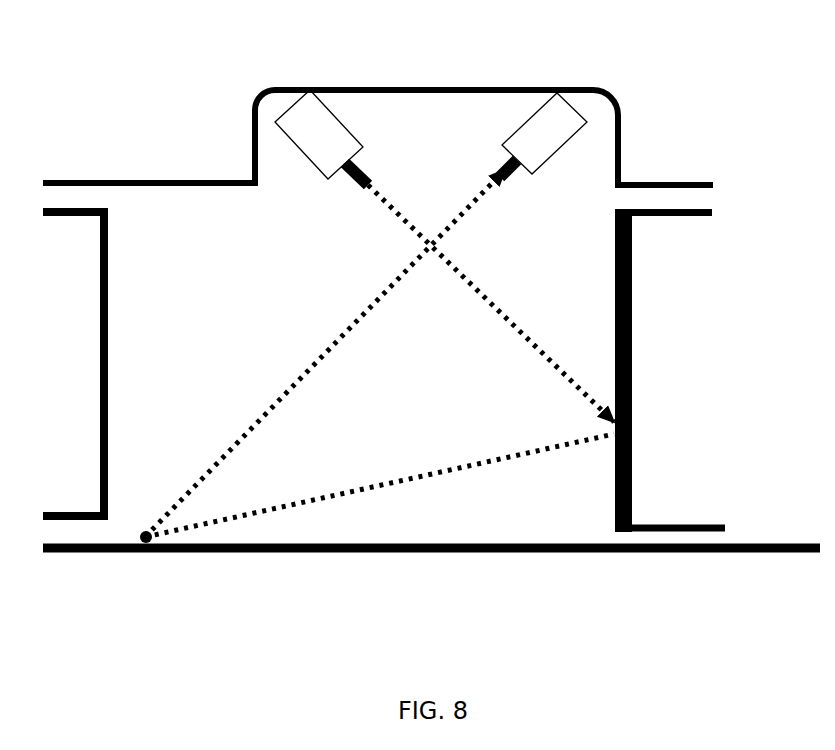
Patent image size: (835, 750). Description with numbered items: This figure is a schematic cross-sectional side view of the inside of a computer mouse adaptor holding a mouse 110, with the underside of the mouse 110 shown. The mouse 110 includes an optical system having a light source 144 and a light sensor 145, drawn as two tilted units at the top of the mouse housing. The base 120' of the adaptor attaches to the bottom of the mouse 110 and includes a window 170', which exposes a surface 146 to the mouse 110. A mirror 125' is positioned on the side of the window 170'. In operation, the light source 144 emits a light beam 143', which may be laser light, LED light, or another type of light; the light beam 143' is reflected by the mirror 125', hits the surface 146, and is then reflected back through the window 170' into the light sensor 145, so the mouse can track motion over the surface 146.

The mouse 110 is at (622, 152).
The base 120' is at (411, 370).
The mirror 125' is at (690, 371).
The light beam 143' is at (377, 356).
The light source 144 is at (323, 132).
The light sensor 145 is at (533, 137).
The surface 146 is at (385, 552).
The window 170' is at (172, 228).